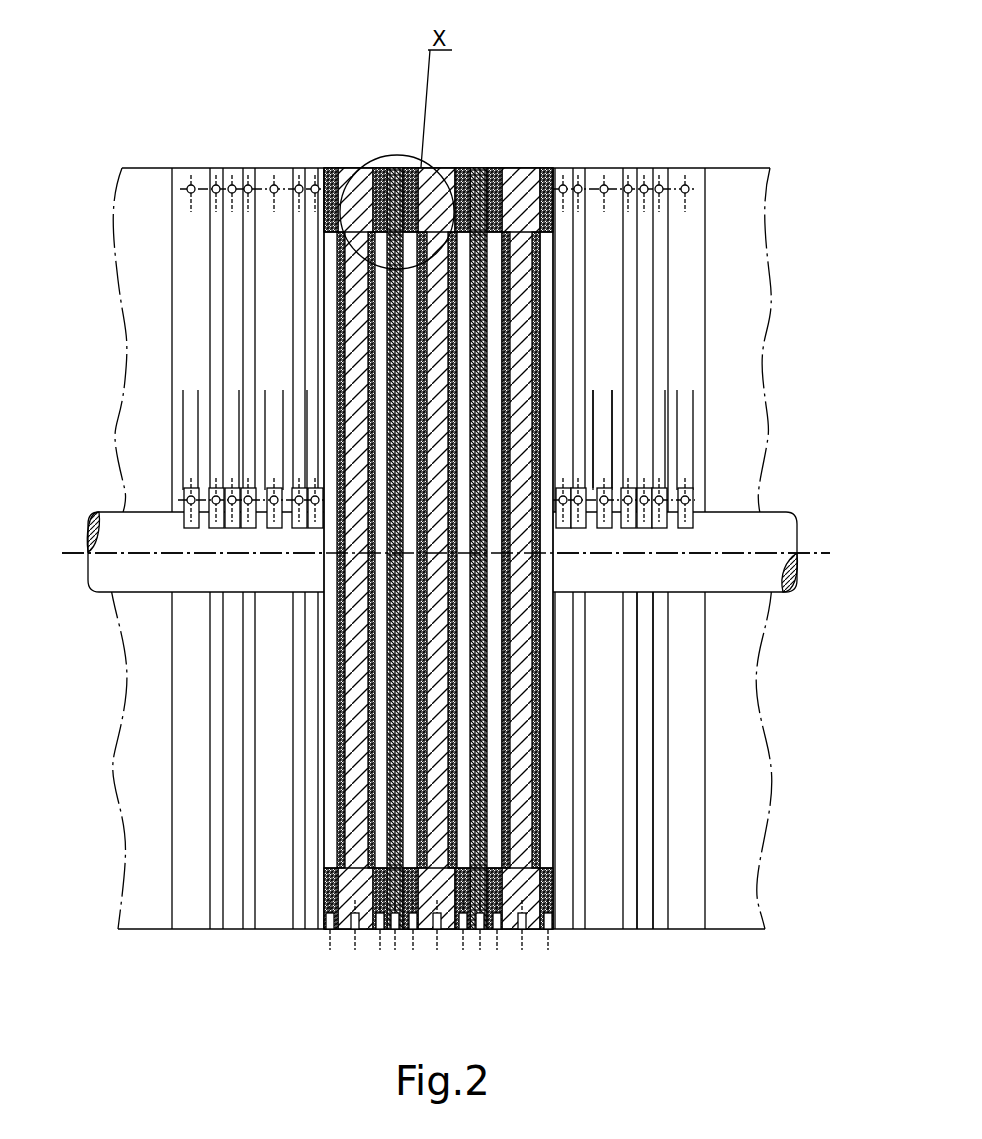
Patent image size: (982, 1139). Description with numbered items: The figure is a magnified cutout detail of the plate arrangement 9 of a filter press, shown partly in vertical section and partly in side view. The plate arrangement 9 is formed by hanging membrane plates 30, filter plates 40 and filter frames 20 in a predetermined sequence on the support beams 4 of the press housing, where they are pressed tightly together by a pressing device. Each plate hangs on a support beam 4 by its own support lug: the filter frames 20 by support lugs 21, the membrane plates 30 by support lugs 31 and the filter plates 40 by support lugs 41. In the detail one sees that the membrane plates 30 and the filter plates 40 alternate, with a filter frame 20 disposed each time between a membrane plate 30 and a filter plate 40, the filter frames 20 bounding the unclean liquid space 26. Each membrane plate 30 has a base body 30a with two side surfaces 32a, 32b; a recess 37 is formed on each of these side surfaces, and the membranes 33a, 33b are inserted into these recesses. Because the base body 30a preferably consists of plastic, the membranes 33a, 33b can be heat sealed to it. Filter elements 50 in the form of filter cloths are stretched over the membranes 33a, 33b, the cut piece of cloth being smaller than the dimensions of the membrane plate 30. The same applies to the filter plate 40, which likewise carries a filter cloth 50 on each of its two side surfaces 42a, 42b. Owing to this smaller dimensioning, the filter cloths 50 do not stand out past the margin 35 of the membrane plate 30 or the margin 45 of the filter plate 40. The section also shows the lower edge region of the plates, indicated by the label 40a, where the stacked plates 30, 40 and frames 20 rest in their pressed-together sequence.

The support beam 4 is at (773, 523).
The plate arrangement 9 is at (555, 88).
The filter frame 20 is at (219, 168).
The support lug 21 is at (688, 502).
The unclean liquid space 26 is at (478, 248).
The membrane plate 30 is at (190, 168).
The base body 30a is at (365, 875).
The support lug 31 is at (660, 508).
The side surface 32a is at (345, 332).
The side surface 32b is at (418, 326).
The membrane 33a is at (355, 875).
The membrane 33b is at (378, 880).
The margin 35 is at (362, 168).
The recess 37 is at (352, 855).
The filter plate 40 is at (230, 168).
The end seal 40a is at (400, 868).
The support lug 41 is at (658, 525).
The side surface 42a is at (385, 350).
The side surface 42b is at (440, 343).
The margin 45 is at (395, 168).
The filter element 50 is at (340, 838).